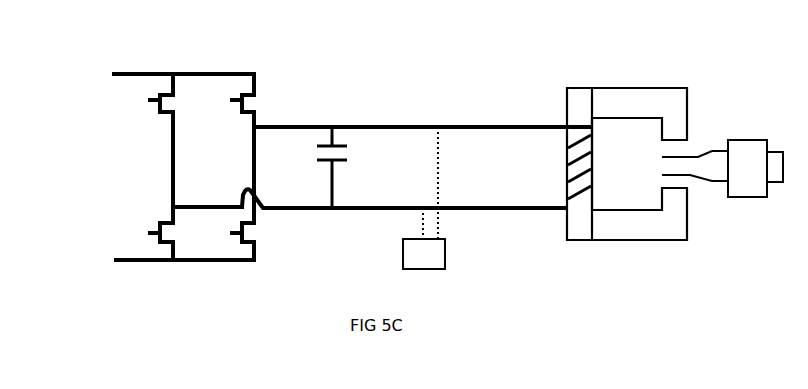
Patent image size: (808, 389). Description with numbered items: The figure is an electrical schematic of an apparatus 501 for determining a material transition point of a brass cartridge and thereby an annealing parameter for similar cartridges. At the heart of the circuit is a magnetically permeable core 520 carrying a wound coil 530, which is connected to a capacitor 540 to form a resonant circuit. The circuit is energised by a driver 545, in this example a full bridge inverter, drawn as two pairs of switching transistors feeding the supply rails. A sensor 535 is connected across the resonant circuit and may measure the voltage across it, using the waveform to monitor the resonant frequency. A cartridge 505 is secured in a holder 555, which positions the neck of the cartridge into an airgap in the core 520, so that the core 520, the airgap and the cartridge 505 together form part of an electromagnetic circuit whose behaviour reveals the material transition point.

The apparatus 501 is at (732, 24).
The cartridge 505 is at (703, 187).
The magnetically permeable core 520 is at (603, 100).
The wound coil 530 is at (567, 147).
The sensor 535 is at (445, 245).
The capacitor 540 is at (349, 150).
The driver 545 is at (160, 160).
The holder 555 is at (746, 145).